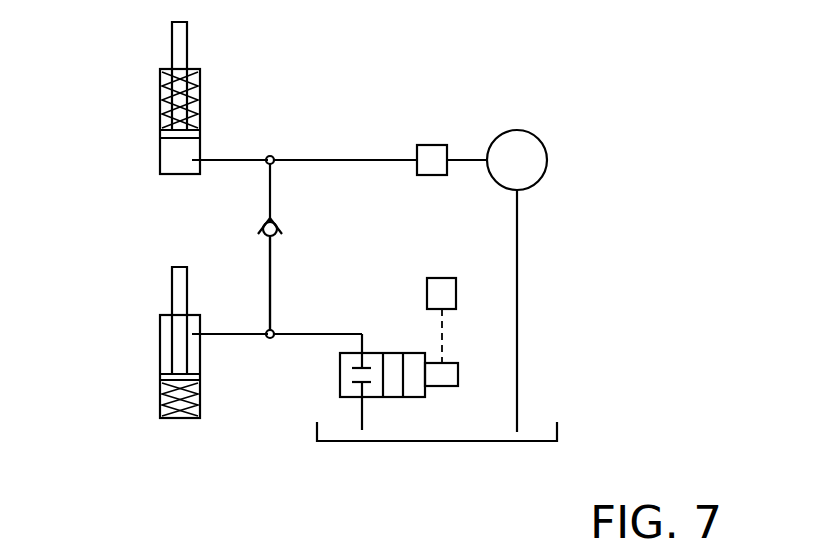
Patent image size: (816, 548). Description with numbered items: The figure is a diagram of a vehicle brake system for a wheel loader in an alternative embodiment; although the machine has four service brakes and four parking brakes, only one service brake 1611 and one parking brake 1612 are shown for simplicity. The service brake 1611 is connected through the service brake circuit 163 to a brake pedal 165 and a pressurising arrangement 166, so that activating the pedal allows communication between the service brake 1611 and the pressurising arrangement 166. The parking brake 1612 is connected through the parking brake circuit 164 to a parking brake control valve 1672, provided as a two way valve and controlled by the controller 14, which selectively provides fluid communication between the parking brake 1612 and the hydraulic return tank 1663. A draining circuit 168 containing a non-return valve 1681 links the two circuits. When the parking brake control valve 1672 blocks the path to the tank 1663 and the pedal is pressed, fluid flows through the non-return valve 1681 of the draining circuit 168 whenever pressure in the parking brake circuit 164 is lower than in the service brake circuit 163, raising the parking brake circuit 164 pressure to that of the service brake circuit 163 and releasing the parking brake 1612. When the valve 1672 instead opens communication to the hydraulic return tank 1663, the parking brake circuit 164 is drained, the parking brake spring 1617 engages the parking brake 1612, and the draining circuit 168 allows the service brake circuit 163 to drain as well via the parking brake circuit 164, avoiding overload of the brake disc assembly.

The controller 14 is at (456, 296).
The service brake circuit 163 is at (236, 159).
The parking brake circuit 164 is at (250, 335).
The brake pedal 165 is at (432, 145).
The pressurising arrangement 166 is at (524, 130).
The draining circuit 168 is at (270, 265).
The service brake 1611 is at (160, 100).
The parking brake 1612 is at (160, 398).
The parking brake spring 1617 is at (180, 419).
The hydraulic return tank 1663 is at (483, 441).
The parking brake control valve 1672 is at (392, 397).
The non-return valve 1681 is at (258, 230).